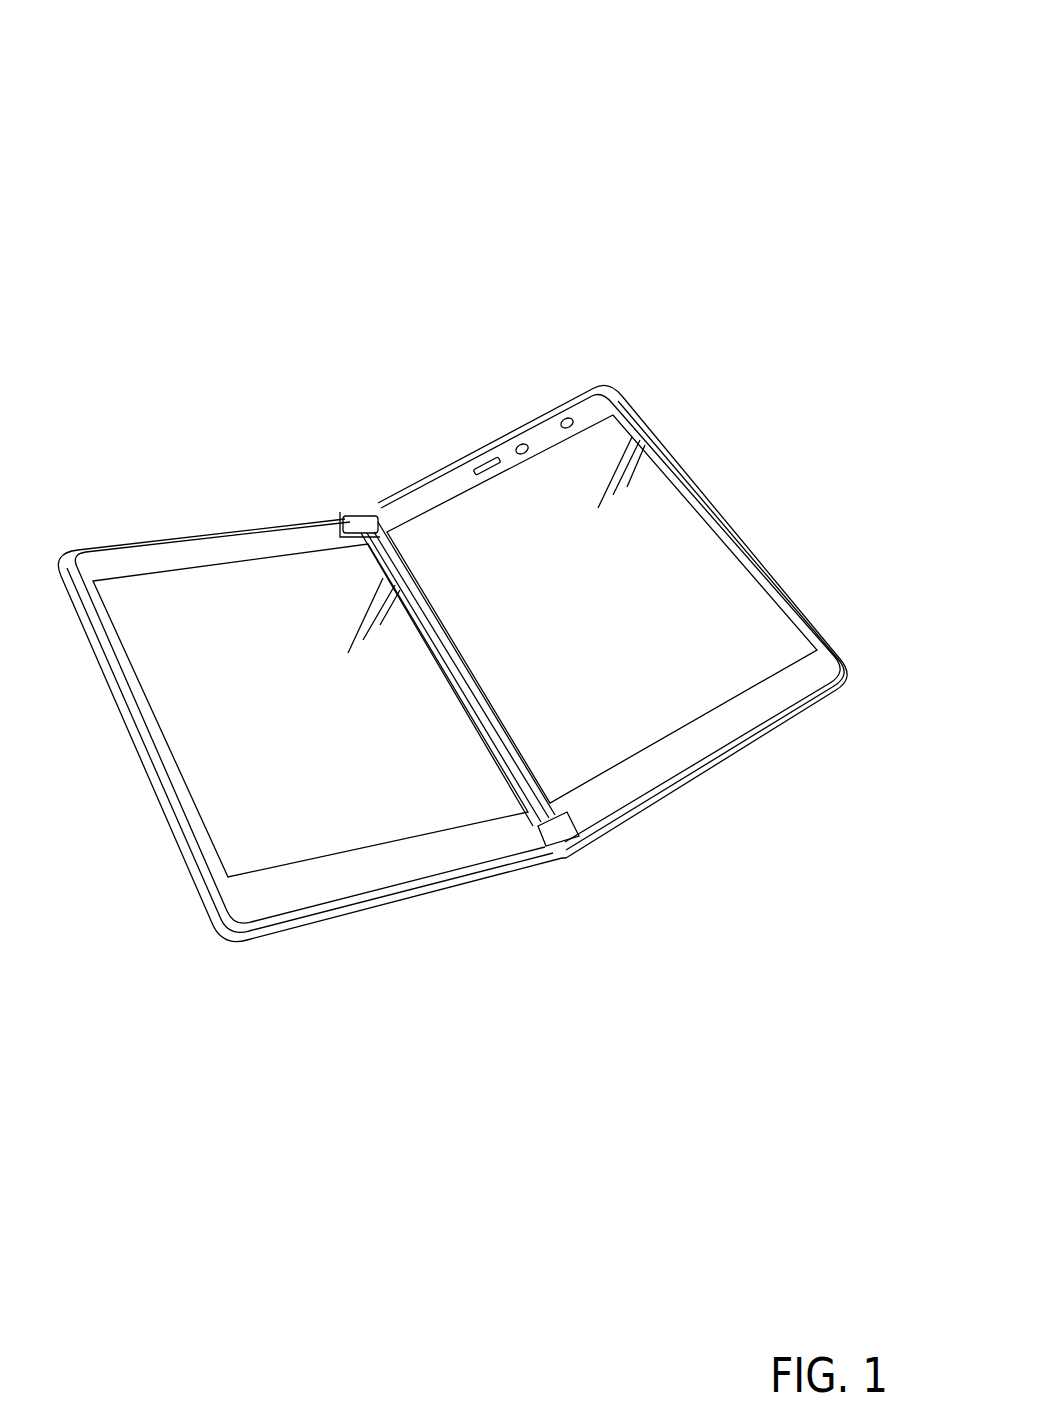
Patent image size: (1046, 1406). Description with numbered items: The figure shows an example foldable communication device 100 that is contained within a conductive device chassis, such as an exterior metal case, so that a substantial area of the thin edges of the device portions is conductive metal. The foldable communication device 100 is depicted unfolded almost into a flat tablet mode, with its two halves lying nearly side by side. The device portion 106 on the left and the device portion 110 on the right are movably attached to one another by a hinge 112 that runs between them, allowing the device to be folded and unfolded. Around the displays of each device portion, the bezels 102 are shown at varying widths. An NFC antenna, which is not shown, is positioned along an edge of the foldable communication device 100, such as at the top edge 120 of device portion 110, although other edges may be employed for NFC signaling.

The foldable communication device 100 is at (772, 95).
The bezels 102 is at (283, 537).
The device portion 106 is at (172, 813).
The device portion 110 is at (693, 483).
The hinge 112 is at (578, 866).
The top edge 120 is at (453, 392).